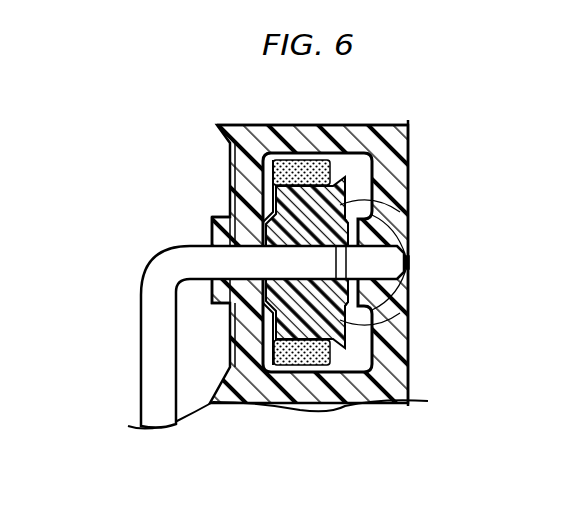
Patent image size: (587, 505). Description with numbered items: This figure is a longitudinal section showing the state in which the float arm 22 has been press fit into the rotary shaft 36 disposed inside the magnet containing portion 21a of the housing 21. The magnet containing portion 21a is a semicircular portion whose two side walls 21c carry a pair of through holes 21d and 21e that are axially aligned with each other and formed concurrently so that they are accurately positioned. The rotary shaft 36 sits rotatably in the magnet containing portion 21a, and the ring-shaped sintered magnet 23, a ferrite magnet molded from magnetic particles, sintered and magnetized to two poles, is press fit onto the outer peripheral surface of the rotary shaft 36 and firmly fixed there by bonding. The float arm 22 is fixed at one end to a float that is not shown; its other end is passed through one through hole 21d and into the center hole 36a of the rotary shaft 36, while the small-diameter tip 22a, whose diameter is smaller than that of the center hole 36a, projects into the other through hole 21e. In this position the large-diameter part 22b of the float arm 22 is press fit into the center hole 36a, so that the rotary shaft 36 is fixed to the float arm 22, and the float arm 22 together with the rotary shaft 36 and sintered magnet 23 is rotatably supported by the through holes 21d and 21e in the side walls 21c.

The housing 21 is at (418, 160).
The magnet containing portion 21a is at (412, 142).
The side walls 21c is at (232, 183).
The through hole 21d is at (222, 252).
The through hole 21e is at (411, 266).
The float arm 22 is at (131, 373).
The small-diameter tip 22a is at (362, 289).
The large-diameter part 22b is at (338, 342).
The sintered magnet 23 is at (297, 366).
The rotary shaft 36 is at (326, 300).
The center hole 36a is at (376, 204).